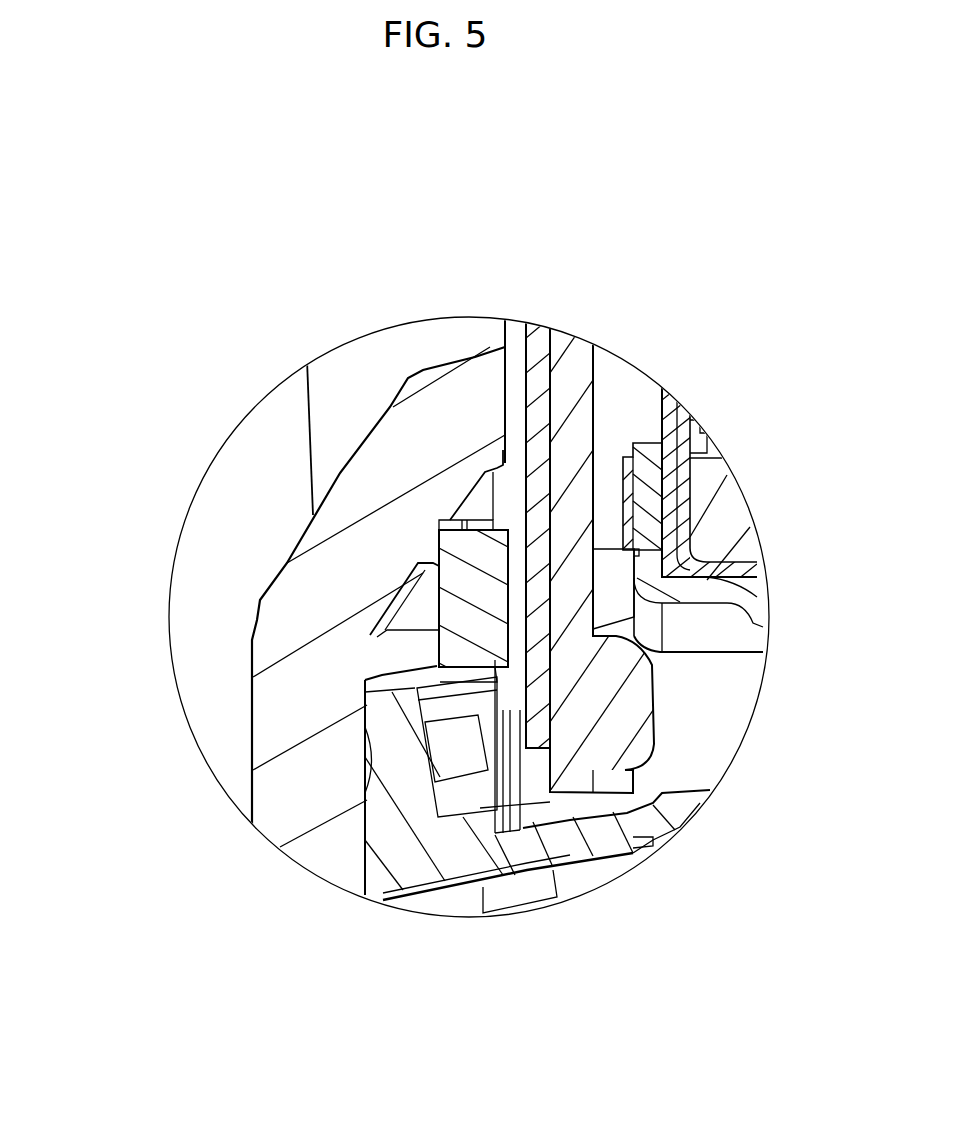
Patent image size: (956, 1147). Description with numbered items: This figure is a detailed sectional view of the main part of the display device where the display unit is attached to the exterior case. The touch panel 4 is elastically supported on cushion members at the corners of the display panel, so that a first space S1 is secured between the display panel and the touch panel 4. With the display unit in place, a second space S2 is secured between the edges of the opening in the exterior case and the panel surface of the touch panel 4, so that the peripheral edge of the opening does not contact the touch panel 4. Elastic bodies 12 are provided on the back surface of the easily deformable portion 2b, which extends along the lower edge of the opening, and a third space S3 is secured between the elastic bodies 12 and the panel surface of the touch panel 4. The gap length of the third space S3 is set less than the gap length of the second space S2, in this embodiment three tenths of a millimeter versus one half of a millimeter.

The easily deformable portion 2b is at (360, 500).
The second space S2 is at (513, 392).
The touch panel 4 is at (538, 345).
The first space S1 is at (620, 410).
The third space S3 is at (520, 618).
The elastic body 12 is at (465, 630).